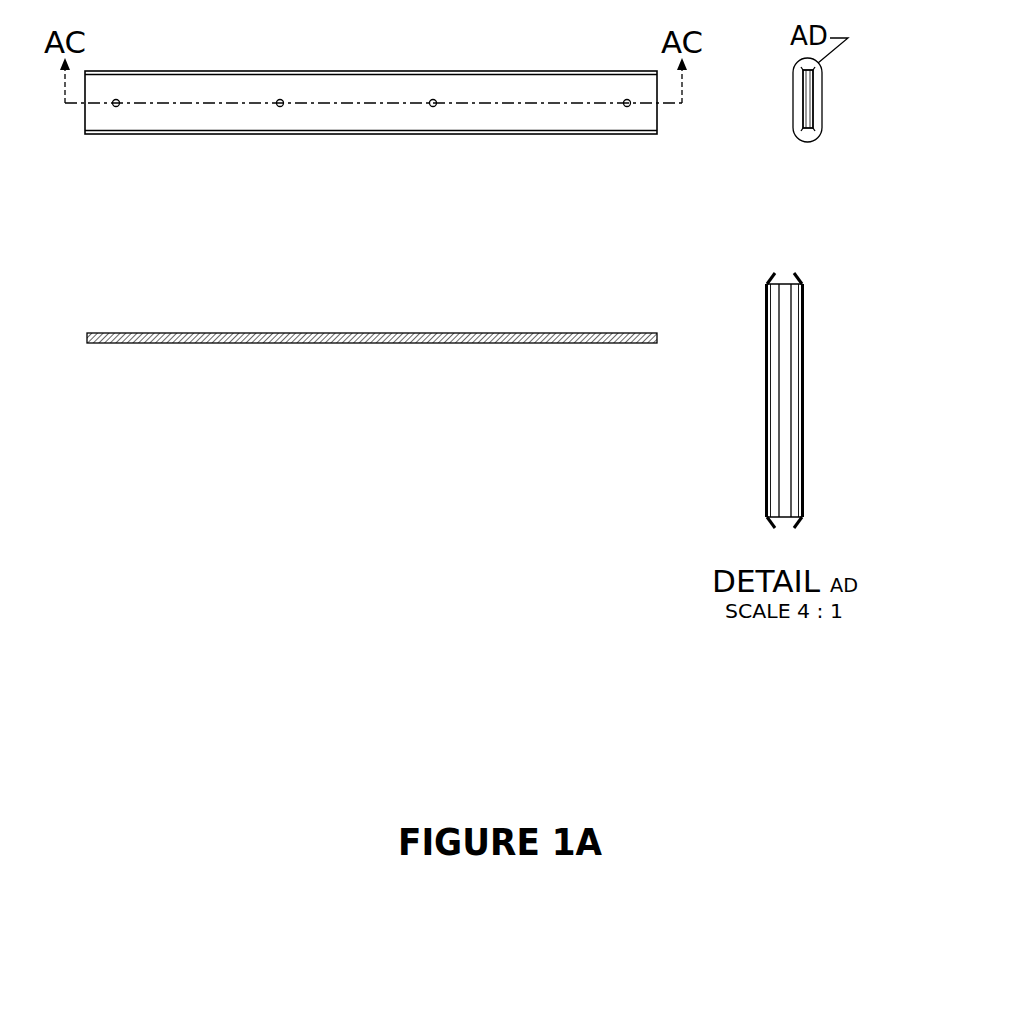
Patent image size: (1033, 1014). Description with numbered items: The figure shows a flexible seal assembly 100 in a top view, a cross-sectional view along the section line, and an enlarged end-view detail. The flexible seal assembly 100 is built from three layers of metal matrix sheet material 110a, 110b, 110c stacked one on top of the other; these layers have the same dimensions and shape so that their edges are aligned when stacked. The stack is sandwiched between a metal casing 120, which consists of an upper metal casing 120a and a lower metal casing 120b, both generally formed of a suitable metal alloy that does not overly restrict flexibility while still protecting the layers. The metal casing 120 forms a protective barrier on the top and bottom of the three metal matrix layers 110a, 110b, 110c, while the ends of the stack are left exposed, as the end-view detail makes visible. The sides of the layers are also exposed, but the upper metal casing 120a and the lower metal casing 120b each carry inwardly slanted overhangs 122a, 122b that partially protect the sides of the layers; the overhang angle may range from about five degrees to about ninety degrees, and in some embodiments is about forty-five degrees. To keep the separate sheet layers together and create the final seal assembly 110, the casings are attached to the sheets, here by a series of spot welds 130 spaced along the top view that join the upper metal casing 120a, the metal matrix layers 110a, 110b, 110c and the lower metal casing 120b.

The flexible seal assembly 100 is at (383, 199).
The seal assembly 110 is at (867, 400).
The metal matrix sheet material layer 110a is at (773, 387).
The metal matrix sheet material layer 110b is at (785, 407).
The metal matrix sheet material layer 110c is at (797, 428).
The metal casing 120 is at (688, 267).
The upper metal casing 120a is at (720, 225).
The lower metal casing 120b is at (765, 302).
The slanted overhang 122a is at (801, 524).
The slanted overhang 122b is at (768, 524).
The spot welds 130 is at (433, 99).